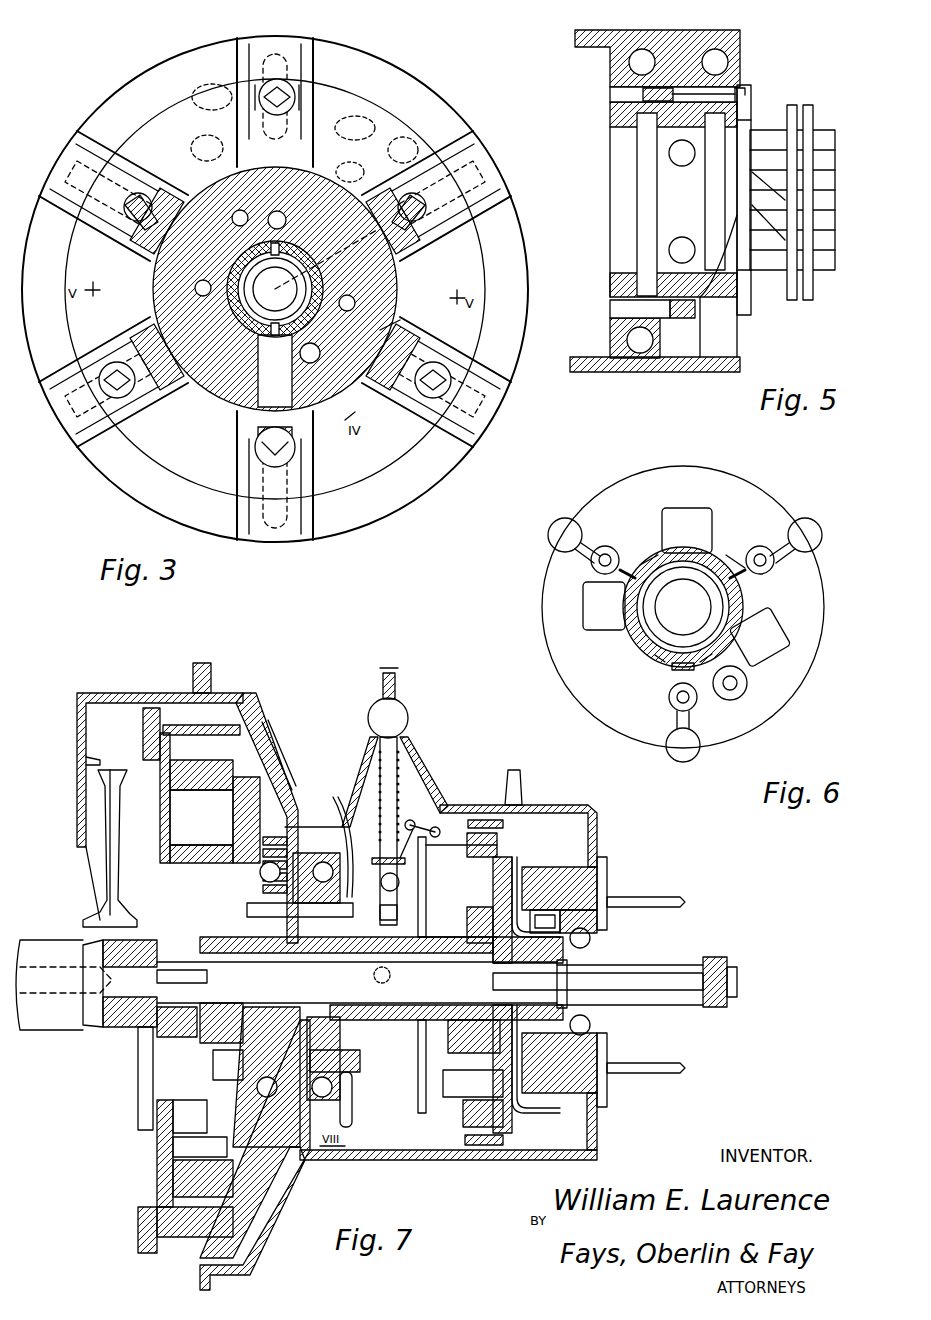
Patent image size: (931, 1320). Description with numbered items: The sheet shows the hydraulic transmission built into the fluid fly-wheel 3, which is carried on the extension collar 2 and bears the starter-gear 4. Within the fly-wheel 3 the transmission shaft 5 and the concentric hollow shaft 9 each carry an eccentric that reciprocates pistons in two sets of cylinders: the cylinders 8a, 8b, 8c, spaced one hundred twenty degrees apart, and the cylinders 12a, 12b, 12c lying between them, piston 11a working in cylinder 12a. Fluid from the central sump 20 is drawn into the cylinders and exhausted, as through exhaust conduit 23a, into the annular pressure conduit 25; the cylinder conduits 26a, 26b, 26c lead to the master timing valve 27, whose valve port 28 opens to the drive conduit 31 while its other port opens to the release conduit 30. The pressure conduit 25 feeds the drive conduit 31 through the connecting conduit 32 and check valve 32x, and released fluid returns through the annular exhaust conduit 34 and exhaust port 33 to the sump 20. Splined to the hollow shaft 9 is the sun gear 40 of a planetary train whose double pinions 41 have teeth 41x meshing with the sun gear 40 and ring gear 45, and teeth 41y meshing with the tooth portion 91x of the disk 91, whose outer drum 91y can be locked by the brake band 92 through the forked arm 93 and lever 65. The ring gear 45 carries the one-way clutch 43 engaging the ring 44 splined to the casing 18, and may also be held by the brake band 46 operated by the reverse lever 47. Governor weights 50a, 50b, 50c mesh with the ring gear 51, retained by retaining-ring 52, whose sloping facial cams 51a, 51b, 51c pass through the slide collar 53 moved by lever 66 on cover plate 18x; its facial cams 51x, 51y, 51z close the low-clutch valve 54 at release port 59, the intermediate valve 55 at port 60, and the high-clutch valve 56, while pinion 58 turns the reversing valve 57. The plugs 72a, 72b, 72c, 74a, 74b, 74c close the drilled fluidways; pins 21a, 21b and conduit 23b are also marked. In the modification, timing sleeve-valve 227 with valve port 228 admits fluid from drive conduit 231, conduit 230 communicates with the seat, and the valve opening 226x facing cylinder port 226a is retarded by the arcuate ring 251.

In FIG. 7, the extension collar 2 is at (147, 1120).
In FIG. 3, the fluid fly-wheel 3 is at (437, 93).
In FIG. 5, the fluid fly-wheel 3 is at (742, 46).
In FIG. 6, the fluid fly-wheel 3 is at (752, 496).
In FIG. 7, the fluid fly-wheel 3 is at (163, 1177).
In FIG. 7, the starter-gear 4 is at (153, 1240).
In FIG. 6, the transmission shaft 5 is at (683, 607).
In FIG. 3, the cylinder 8a is at (318, 115).
In FIG. 7, the cylinder 8a is at (201, 785).
In FIG. 3, the cylinder 8b is at (85, 430).
In FIG. 3, the cylinder 8c is at (490, 397).
In FIG. 6, the hollow shaft 9 is at (640, 633).
In FIG. 7, the piston 11a is at (203, 1167).
In FIG. 3, the cylinder 12a is at (270, 533).
In FIG. 7, the cylinder 12a is at (190, 1116).
In FIG. 3, the cylinder 12b is at (470, 150).
In FIG. 3, the cylinder 12c is at (78, 160).
In FIG. 7, the transmission casing 18 is at (232, 700).
In FIG. 7, the detachable cover plate 18x is at (277, 752).
In FIG. 7, the central sump 20 is at (200, 1047).
In FIG. 3, the pin 21a is at (262, 76).
In FIG. 3, the pin 21b is at (83, 400).
In FIG. 3, the exhaust conduit 23a is at (305, 146).
In FIG. 3, the link 23b is at (147, 343).
In FIG. 3, the pressure conduit 25 is at (222, 190).
In FIG. 5, the pressure conduit 25 is at (598, 342).
In FIG. 3, the conduit 26a is at (270, 418).
In FIG. 3, the conduit 26b is at (403, 250).
In FIG. 5, the conduit 26b is at (668, 152).
In FIG. 3, the conduit 26c is at (153, 250).
In FIG. 5, the conduit 26c is at (668, 250).
In FIG. 3, the master timing valve 27 is at (323, 288).
In FIG. 3, the valve port 28 is at (215, 382).
In FIG. 5, the release conduit 30 is at (712, 202).
In FIG. 3, the drive conduit 31 is at (403, 150).
In FIG. 5, the drive conduit 31 is at (642, 190).
In FIG. 3, the connecting conduit 32 is at (350, 172).
In FIG. 3, the check valve 32x is at (330, 168).
In FIG. 3, the exhaust port 33 is at (210, 180).
In FIG. 5, the exhaust conduit 34 is at (715, 62).
In FIG. 7, the sun gear 40 is at (477, 908).
In FIG. 7, the planetary pinion 41 is at (457, 1062).
In FIG. 7, the gear teeth 41x is at (487, 1110).
In FIG. 7, the gear teeth 41y is at (447, 1138).
In FIG. 7, the one-way clutch 43 is at (563, 907).
In FIG. 7, the ring 44 is at (570, 897).
In FIG. 7, the ring gear 45 is at (467, 845).
In FIG. 7, the brake band 46 is at (505, 825).
In FIG. 7, the reverse lever 47 is at (520, 788).
In FIG. 6, the centrifugal weight 50a is at (683, 752).
In FIG. 7, the centrifugal weight 50a is at (352, 1110).
In FIG. 6, the centrifugal weight 50b is at (810, 535).
In FIG. 6, the centrifugal weight 50c is at (563, 536).
In FIG. 5, the ring gear 51 is at (752, 93).
In FIG. 6, the ring gear 51 is at (707, 545).
In FIG. 5, the sloping longitudinal facial cam 51a is at (748, 175).
In FIG. 6, the sloping longitudinal facial cam 51a is at (662, 668).
In FIG. 7, the sloping longitudinal facial cam 51a is at (379, 1077).
In FIG. 6, the sloping longitudinal facial cam 51b is at (737, 565).
In FIG. 6, the sloping longitudinal facial cam 51c is at (628, 565).
In FIG. 5, the facial cam 51x is at (742, 80).
In FIG. 6, the facial cam 51x is at (682, 522).
In FIG. 6, the facial cam 51y is at (602, 606).
In FIG. 6, the facial cam 51z is at (762, 634).
In FIG. 7, the retaining-ring 52 is at (380, 890).
In FIG. 5, the slide collar 53 is at (808, 112).
In FIG. 7, the slide collar 53 is at (398, 1050).
In FIG. 3, the low-clutch valve 54 is at (195, 284).
In FIG. 5, the low-clutch valve 54 is at (737, 325).
In FIG. 3, the intermediate clutch control valve 55 is at (356, 304).
In FIG. 5, the intermediate clutch control valve 55 is at (660, 88).
In FIG. 7, the high-clutch control valve 56 is at (290, 900).
In FIG. 3, the four-way reversing valve 57 is at (400, 320).
In FIG. 6, the pinion 58 is at (748, 686).
In FIG. 5, the release port 59 is at (625, 311).
In FIG. 5, the port 60 is at (618, 95).
In FIG. 7, the lever 65 is at (392, 867).
In FIG. 7, the lever 66 is at (395, 692).
In FIG. 3, the plug 72a is at (318, 75).
In FIG. 3, the plug 72b is at (128, 410).
In FIG. 3, the plug 72c is at (428, 418).
In FIG. 3, the plug 74a is at (297, 452).
In FIG. 3, the plug 74b is at (430, 238).
In FIG. 3, the plug 74c is at (148, 198).
In FIG. 7, the disk 91 is at (428, 895).
In FIG. 7, the tooth portion 91x is at (458, 935).
In FIG. 7, the outer drum 91y is at (430, 865).
In FIG. 7, the brake band 92 is at (463, 850).
In FIG. 7, the forked arm 93 is at (373, 858).
In FIG. 7, the cylinder port 226a is at (257, 1163).
In FIG. 7, the valve opening 226x is at (317, 1027).
In FIG. 7, the timing sleeve-valve 227 is at (255, 1038).
In FIG. 7, the valve port 228 is at (290, 937).
In FIG. 7, the conduit 230 is at (332, 940).
In FIG. 7, the drive conduit 231 is at (268, 920).
In FIG. 7, the arcuate movable ring 251 is at (340, 830).